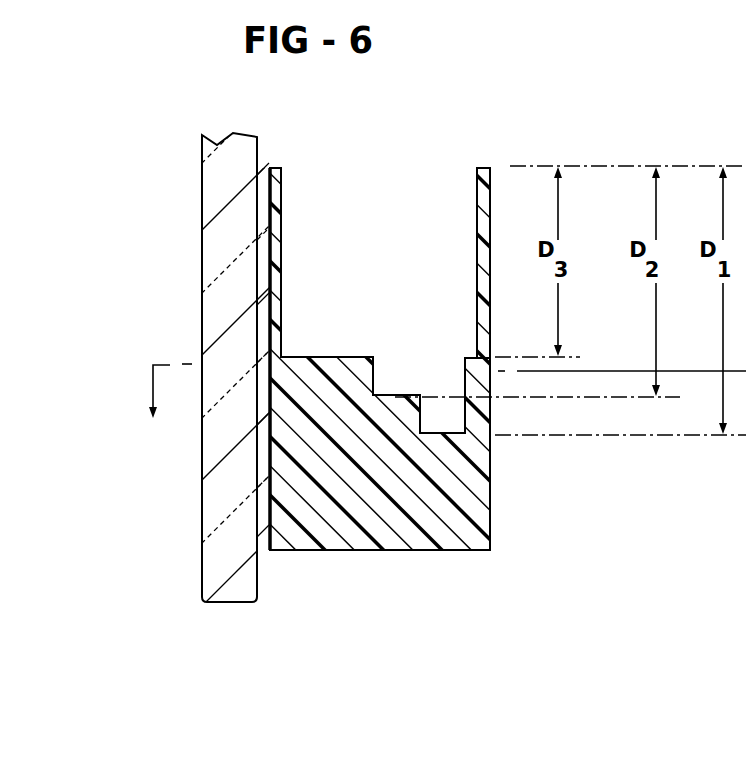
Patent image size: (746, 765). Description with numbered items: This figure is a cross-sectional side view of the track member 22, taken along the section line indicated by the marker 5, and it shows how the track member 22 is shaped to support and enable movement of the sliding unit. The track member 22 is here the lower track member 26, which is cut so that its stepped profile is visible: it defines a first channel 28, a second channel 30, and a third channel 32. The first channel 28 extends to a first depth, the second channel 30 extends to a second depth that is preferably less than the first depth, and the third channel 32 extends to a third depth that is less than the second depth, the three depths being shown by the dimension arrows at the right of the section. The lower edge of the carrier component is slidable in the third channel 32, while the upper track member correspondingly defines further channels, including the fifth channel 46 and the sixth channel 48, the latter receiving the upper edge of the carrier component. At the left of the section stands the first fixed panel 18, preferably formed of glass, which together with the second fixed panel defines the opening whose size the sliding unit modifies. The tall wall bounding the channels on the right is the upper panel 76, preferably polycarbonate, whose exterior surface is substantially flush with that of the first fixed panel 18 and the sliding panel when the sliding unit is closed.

The first fixed panel 18 is at (223, 602).
The fifth channel 46 is at (257, 588).
The sixth channel 48 is at (262, 542).
The track member 22 is at (451, 566).
The lower track member 26 is at (392, 551).
The first channel 28 is at (450, 428).
The second channel 30 is at (388, 374).
The third channel 32 is at (399, 243).
The upper panel 76 is at (486, 168).
The section line 5 is at (160, 390).